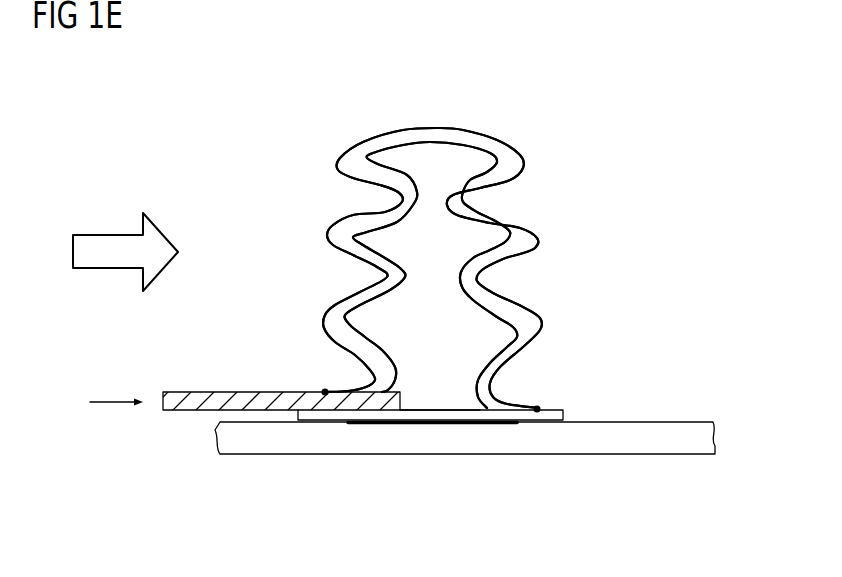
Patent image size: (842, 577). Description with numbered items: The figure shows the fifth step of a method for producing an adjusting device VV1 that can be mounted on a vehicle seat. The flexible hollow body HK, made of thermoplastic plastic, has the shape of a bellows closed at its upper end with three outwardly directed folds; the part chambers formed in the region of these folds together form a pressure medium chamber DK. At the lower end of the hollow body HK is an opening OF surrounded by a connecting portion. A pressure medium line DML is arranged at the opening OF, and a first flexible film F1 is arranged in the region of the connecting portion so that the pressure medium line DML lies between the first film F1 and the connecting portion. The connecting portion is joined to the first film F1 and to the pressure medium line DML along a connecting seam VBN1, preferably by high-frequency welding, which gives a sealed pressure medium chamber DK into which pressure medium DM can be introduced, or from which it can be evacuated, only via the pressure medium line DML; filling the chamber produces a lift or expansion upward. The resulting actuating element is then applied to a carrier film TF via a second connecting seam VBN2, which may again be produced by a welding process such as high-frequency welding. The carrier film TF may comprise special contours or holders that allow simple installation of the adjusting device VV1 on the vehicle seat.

The hollow body HK is at (445, 133).
The pressure medium chamber DK is at (460, 311).
The adjusting device VV1 is at (633, 276).
The opening OF is at (431, 393).
The connecting seam VBN1 is at (325, 392).
The second connecting seam VBN2 is at (442, 425).
The pressure medium DM is at (115, 403).
The pressure medium line DML is at (190, 402).
The first flexible film F1 is at (527, 415).
The carrier film TF is at (628, 437).